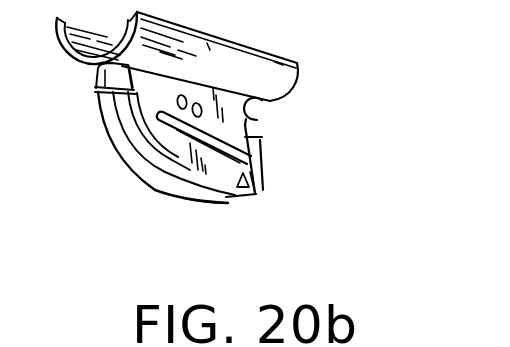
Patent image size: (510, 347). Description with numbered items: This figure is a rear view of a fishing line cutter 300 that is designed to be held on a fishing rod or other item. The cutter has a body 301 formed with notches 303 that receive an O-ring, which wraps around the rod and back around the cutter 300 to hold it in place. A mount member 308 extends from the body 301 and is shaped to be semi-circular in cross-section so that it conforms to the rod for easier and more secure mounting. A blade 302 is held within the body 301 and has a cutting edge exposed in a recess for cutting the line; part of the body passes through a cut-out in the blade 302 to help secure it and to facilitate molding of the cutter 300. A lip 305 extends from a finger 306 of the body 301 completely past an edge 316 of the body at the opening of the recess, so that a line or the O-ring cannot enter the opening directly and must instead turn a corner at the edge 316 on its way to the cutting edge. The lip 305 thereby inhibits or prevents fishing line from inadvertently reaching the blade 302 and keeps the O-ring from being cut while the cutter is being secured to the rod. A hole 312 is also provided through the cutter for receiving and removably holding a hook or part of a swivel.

The fishing line cutter 300 is at (162, 197).
The body 301 is at (247, 119).
The blade 302 is at (187, 135).
The notches 303 is at (103, 78).
The lip 305 is at (257, 152).
The finger 306 is at (212, 177).
The mount member 308 is at (213, 57).
The hole 312 is at (256, 194).
The edge 316 is at (258, 158).